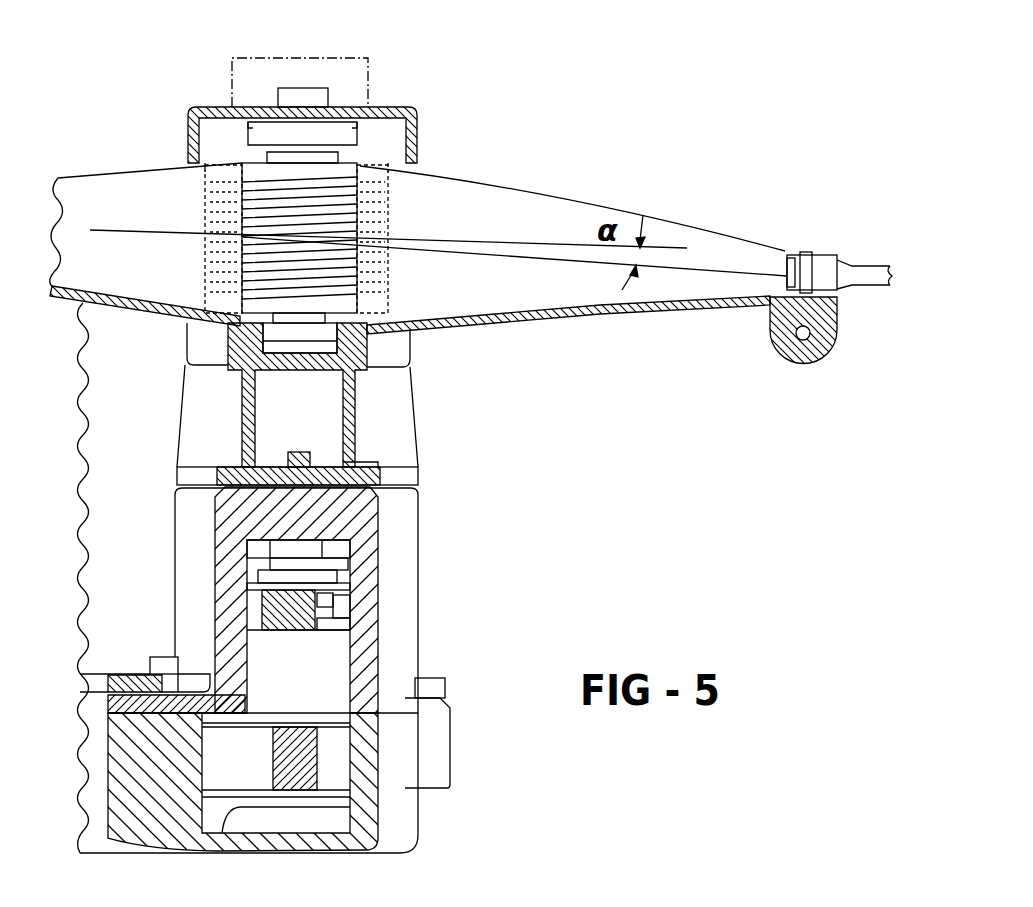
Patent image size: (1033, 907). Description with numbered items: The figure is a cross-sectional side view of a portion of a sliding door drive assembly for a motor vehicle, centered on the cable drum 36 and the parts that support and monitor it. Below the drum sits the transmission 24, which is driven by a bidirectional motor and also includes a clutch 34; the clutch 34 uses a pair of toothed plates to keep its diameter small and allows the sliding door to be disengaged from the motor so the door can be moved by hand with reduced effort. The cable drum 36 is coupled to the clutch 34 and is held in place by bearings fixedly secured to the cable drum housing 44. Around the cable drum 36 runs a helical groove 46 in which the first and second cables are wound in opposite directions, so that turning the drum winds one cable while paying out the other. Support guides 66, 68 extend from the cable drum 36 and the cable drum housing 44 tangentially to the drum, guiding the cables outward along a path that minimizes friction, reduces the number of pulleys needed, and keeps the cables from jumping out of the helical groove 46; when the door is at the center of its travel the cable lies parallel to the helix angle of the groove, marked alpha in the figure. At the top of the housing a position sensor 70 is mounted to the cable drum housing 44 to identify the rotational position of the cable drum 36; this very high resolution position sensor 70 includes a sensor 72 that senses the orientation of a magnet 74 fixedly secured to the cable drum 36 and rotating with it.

The transmission 24 is at (453, 762).
The clutch 34 is at (331, 645).
The cable drum 36 is at (221, 322).
The cable drum housing 44 is at (417, 123).
The helical groove 46 is at (368, 210).
The support guide 66 is at (70, 300).
The support guide 68 is at (578, 317).
The position sensor 70 is at (369, 69).
The sensor 72 is at (303, 88).
The magnet 74 is at (265, 157).